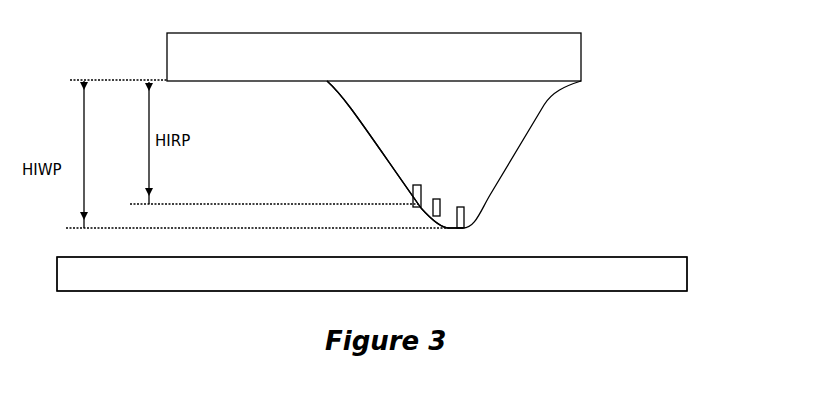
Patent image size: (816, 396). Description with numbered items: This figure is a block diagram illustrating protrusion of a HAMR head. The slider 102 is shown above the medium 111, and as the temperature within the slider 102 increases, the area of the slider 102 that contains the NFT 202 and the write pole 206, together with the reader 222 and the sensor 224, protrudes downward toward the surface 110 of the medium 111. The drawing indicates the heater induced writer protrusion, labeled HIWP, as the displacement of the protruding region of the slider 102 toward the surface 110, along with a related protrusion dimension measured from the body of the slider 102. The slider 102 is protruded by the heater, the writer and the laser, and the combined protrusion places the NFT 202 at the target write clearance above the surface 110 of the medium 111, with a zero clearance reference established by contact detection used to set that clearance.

The slider 102 is at (544, 58).
The NFT 202 is at (460, 154).
The write pole 206 is at (462, 208).
The reader 222 is at (417, 191).
The sensor 224 is at (421, 207).
The surface 110 is at (615, 257).
The medium 111 is at (372, 274).